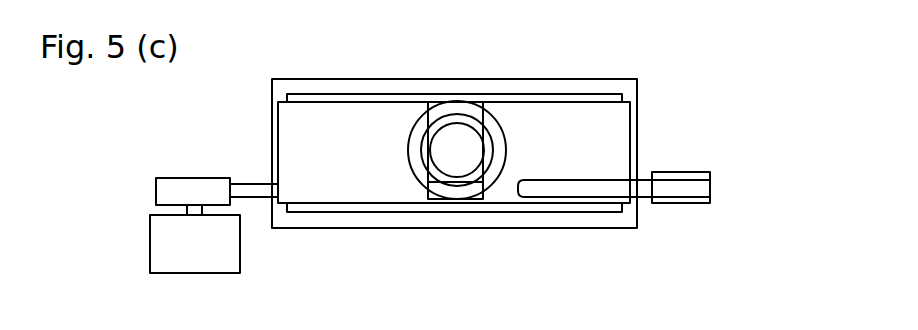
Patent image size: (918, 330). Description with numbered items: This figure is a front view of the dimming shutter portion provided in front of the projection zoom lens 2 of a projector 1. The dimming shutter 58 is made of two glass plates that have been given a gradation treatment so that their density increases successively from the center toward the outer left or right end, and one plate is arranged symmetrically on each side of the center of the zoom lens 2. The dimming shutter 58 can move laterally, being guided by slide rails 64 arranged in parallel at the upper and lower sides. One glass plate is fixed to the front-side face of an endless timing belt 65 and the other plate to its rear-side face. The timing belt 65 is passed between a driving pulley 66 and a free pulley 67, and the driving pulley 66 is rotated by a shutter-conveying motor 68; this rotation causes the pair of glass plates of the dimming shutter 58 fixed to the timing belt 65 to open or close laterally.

The projector 1 is at (625, 93).
The projection zoom lens 2 is at (457, 160).
The dimming shutter 58 is at (372, 125).
The slide rails 64 is at (440, 97).
The timing belt 65 is at (255, 192).
The driving pulley 66 is at (165, 190).
The free pulley 67 is at (700, 200).
The shutter-conveying motor 68 is at (172, 248).